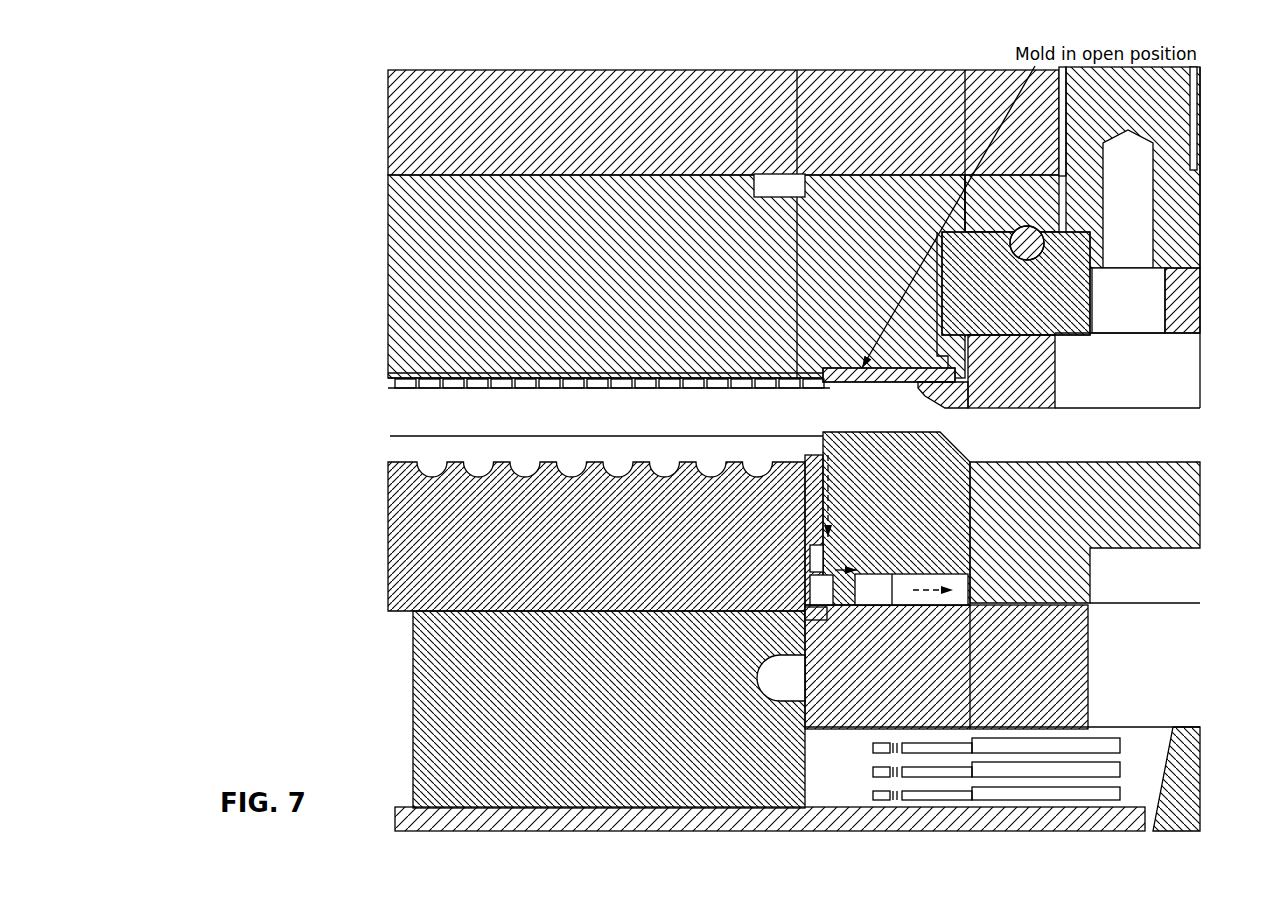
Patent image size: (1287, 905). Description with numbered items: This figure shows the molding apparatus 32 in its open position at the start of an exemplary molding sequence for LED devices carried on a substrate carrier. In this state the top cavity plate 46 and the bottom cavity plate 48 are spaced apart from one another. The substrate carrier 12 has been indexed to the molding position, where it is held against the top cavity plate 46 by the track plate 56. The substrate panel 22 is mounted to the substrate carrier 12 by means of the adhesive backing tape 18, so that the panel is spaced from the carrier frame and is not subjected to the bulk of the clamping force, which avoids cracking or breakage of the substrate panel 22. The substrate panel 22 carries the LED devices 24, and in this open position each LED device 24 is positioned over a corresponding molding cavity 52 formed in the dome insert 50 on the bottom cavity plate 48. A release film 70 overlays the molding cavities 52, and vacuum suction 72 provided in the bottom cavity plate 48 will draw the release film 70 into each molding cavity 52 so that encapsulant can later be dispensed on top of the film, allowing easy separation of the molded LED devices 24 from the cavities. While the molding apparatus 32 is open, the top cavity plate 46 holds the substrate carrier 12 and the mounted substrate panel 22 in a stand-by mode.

The substrate carrier 12 is at (950, 368).
The adhesive backing tape 18 is at (420, 377).
The substrate panel 22 is at (400, 378).
The LED devices 24 is at (568, 375).
The molding apparatus 32 is at (230, 170).
The top cavity plate 46 is at (878, 110).
The bottom cavity plate 48 is at (1200, 512).
The dome insert 50 is at (559, 631).
The molding cavity 52 is at (427, 477).
The track plate 56 is at (1022, 380).
The release film 70 is at (400, 437).
The vacuum suction 72 is at (955, 572).